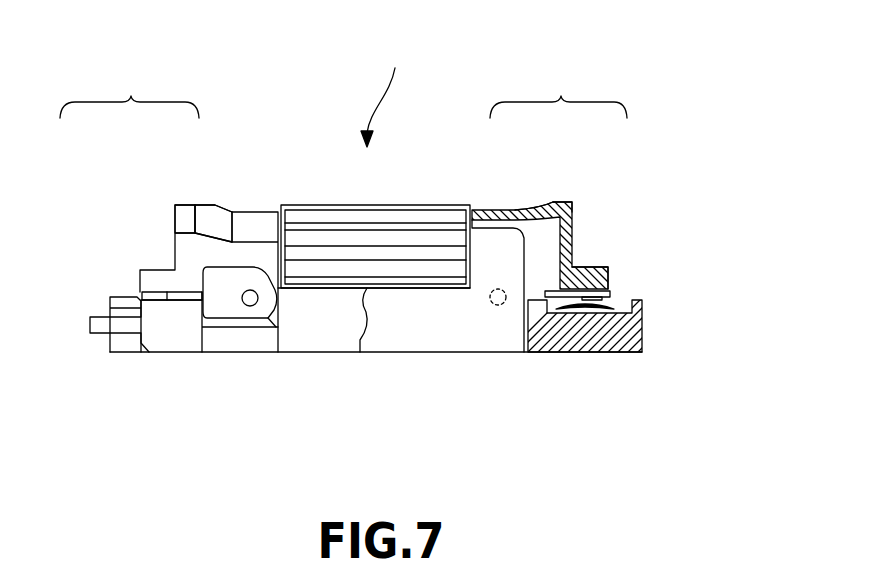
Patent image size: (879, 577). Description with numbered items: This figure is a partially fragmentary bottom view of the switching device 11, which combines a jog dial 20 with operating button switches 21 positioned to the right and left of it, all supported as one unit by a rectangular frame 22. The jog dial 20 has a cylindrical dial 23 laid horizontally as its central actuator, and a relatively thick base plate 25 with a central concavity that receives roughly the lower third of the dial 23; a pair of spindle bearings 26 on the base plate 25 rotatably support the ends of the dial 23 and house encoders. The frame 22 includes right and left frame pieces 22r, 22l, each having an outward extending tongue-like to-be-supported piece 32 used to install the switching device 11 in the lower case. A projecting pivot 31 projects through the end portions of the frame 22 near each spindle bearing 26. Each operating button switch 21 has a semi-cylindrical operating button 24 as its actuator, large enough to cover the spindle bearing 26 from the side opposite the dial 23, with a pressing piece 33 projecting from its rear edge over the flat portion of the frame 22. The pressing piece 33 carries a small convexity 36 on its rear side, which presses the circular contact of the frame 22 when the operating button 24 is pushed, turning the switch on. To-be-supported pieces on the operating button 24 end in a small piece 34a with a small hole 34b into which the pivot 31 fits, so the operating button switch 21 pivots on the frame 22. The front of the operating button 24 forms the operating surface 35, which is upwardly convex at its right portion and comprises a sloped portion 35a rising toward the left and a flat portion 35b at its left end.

The switching device 11 is at (388, 91).
The jog dial 20 is at (313, 215).
The operating button switch 21 is at (212, 218).
The frame 22 is at (342, 328).
The frame piece 22l is at (147, 353).
The frame piece 22r is at (637, 332).
The dial 23 is at (408, 215).
The operating button 24 is at (258, 216).
The base plate 25 is at (417, 328).
The spindle bearing 26 is at (518, 252).
The projecting pivot 31 is at (272, 327).
The to-be-supported piece 32 is at (92, 322).
The pressing piece 33 is at (593, 267).
The small piece 34a is at (215, 310).
The small hole 34b is at (244, 305).
The operating surface 35 is at (343, 94).
The sloped portion 35a is at (201, 215).
The flat portion 35b is at (182, 215).
The small convexity 36 is at (157, 295).